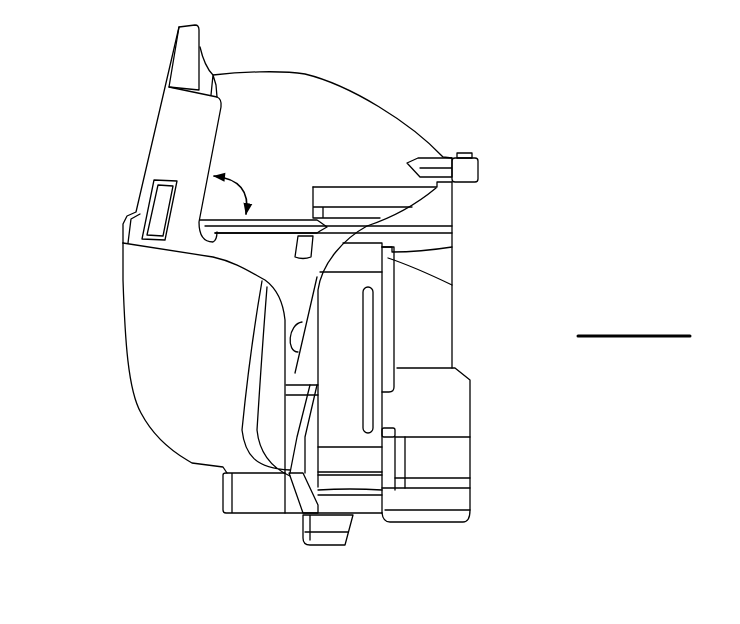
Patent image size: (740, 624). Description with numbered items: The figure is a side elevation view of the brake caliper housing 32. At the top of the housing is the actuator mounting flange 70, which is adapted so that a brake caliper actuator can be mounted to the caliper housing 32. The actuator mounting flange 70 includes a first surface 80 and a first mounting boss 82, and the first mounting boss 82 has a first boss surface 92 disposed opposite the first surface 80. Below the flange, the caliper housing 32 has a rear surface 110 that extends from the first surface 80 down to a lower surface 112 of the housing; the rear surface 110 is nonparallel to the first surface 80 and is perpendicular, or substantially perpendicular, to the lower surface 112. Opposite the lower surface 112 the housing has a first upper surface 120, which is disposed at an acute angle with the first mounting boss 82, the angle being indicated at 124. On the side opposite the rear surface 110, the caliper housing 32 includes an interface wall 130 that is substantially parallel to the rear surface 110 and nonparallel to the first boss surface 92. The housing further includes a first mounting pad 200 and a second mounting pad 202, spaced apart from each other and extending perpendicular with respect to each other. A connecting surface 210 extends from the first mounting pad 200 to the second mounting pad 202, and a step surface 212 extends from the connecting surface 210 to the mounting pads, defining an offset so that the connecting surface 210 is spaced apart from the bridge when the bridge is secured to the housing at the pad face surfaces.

The caliper housing 32 is at (128, 70).
The actuator mounting flange 70 is at (200, 47).
The first surface 80 is at (152, 143).
The first mounting boss 82 is at (299, 72).
The first boss surface 92 is at (218, 143).
The rear surface 110 is at (123, 322).
The lower surface 112 is at (265, 467).
The first upper surface 120 is at (278, 220).
The acute angle 124 is at (238, 180).
The interface wall 130 is at (470, 414).
The first mounting pad 200 is at (385, 478).
The second mounting pad 202 is at (392, 257).
The connecting surface 210 is at (363, 366).
The step surface 212 is at (378, 330).